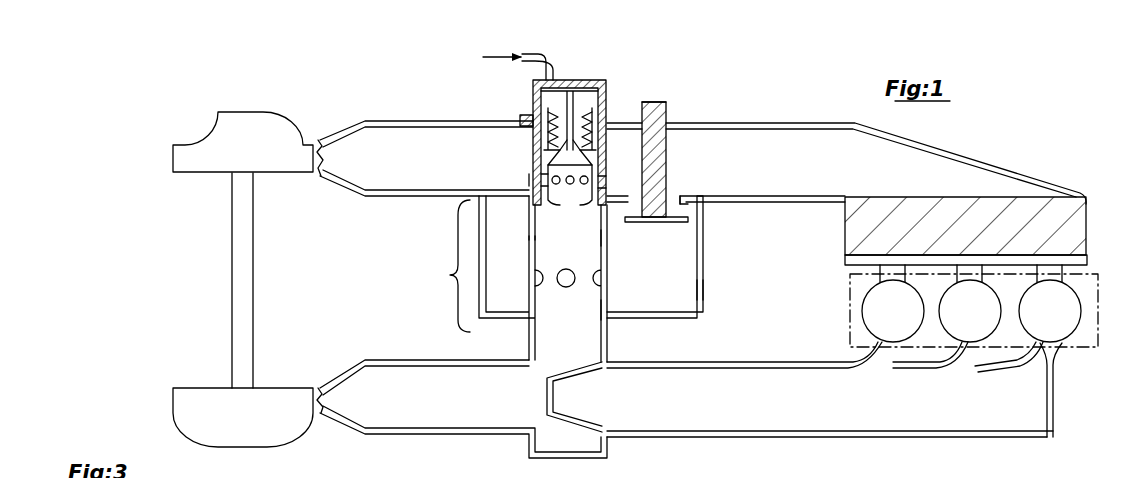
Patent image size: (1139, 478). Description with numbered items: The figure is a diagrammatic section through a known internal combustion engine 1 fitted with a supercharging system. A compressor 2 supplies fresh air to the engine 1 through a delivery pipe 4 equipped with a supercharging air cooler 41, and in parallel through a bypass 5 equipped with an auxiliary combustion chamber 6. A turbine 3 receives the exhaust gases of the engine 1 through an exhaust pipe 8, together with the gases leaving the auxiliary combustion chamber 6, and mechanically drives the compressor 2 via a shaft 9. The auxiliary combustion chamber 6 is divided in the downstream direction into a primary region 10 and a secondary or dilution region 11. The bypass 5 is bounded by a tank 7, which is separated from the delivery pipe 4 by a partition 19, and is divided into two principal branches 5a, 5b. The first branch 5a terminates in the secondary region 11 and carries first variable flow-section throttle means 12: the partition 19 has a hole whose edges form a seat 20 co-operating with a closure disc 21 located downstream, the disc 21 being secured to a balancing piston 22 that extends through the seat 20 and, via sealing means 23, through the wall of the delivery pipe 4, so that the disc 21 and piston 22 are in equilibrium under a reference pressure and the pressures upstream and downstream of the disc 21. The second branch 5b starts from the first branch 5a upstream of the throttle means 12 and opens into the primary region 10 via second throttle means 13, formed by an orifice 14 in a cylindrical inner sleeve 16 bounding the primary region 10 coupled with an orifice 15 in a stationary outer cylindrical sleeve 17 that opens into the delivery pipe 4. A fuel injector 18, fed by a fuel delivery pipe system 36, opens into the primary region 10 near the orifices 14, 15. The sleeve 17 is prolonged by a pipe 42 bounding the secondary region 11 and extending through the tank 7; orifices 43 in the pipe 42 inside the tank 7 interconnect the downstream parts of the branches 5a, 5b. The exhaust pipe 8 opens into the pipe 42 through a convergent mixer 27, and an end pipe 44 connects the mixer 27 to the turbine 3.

The internal combustion engine 1 is at (845, 310).
The compressor 2 is at (197, 136).
The turbine 3 is at (199, 386).
The delivery pipe 4 is at (418, 122).
The bypass 5 is at (451, 266).
The first branch 5a is at (683, 268).
The second branch 5b is at (532, 222).
The auxiliary combustion chamber 6 is at (611, 238).
The tank 7 is at (704, 289).
The exhaust pipe 8 is at (797, 438).
The shaft 9 is at (240, 287).
The primary region 10 is at (565, 162).
The secondary region 11 is at (600, 304).
The first variable flow-section throttle means 12 is at (684, 192).
The second throttle means 13 is at (531, 178).
The orifice 14 is at (557, 206).
The orifice 15 is at (542, 182).
The inner sleeve 16 is at (585, 207).
The outer cylindrical sleeve 17 is at (604, 156).
The fuel injector 18 is at (599, 112).
The partition 19 is at (690, 196).
The seat 20 is at (636, 188).
The closure disc 21 is at (688, 224).
The balancing piston 22 is at (657, 160).
The sealing means 23 is at (672, 125).
The mixer 27 is at (547, 397).
The fuel delivery pipe system 36 is at (522, 66).
The supercharging air cooler 41 is at (845, 232).
The pipe 42 is at (532, 250).
The orifices 43 is at (529, 278).
The end pipe 44 is at (413, 349).